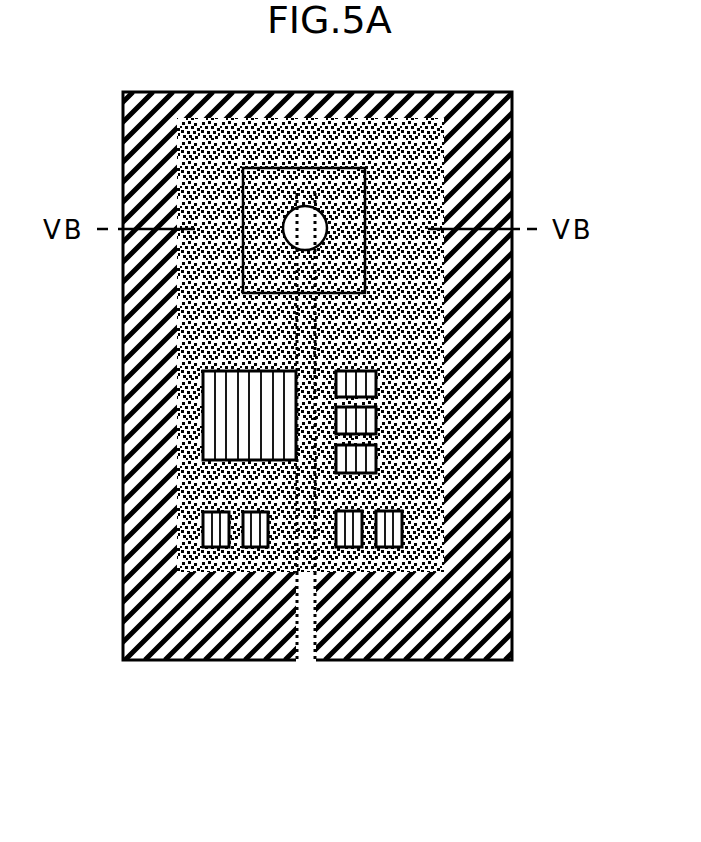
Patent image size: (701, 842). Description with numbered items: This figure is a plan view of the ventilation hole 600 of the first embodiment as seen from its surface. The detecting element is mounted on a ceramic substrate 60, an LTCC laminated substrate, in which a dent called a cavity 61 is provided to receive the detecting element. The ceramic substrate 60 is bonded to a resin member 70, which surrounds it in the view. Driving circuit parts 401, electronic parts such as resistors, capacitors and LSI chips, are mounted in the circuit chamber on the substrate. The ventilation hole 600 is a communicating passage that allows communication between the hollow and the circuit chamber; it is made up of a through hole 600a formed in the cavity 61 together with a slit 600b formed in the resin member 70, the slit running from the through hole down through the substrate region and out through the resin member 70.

The ceramic substrate 60 is at (405, 275).
The cavity 61 is at (257, 263).
The resin member 70 is at (492, 608).
The driving circuit parts 401 is at (215, 420).
The ventilation hole 600 is at (302, 648).
The through hole 600a is at (327, 221).
The slit 600b is at (310, 333).